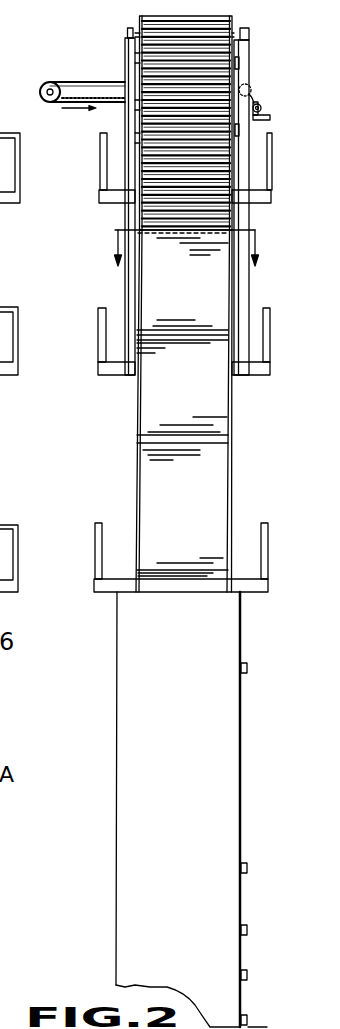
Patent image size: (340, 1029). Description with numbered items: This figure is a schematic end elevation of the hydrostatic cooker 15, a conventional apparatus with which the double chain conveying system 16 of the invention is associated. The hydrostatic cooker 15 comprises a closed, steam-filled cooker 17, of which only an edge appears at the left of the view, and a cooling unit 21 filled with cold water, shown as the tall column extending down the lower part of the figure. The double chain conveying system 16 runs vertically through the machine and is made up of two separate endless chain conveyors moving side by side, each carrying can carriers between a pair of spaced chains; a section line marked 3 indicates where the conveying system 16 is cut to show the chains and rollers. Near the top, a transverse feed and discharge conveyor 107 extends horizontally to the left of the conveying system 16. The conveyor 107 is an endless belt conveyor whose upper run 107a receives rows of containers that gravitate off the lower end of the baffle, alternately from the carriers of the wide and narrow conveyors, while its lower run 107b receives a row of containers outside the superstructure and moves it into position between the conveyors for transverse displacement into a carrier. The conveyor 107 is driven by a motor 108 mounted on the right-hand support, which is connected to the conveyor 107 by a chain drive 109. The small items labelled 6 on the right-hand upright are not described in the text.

The hydrostatic cooker 15 is at (113, 48).
The double chain conveying system 16 is at (203, 418).
The section line 3- 3 is at (187, 248).
The transverse feed and discharge conveyor 107 is at (66, 90).
The upper run 107a is at (110, 82).
The lower run 107b is at (108, 103).
The sensor 6 is at (260, 63).
The chain drive 109 is at (257, 102).
The motor 108 is at (263, 108).
The cooling unit 21 is at (244, 712).
The cooker 17 is at (0, 433).